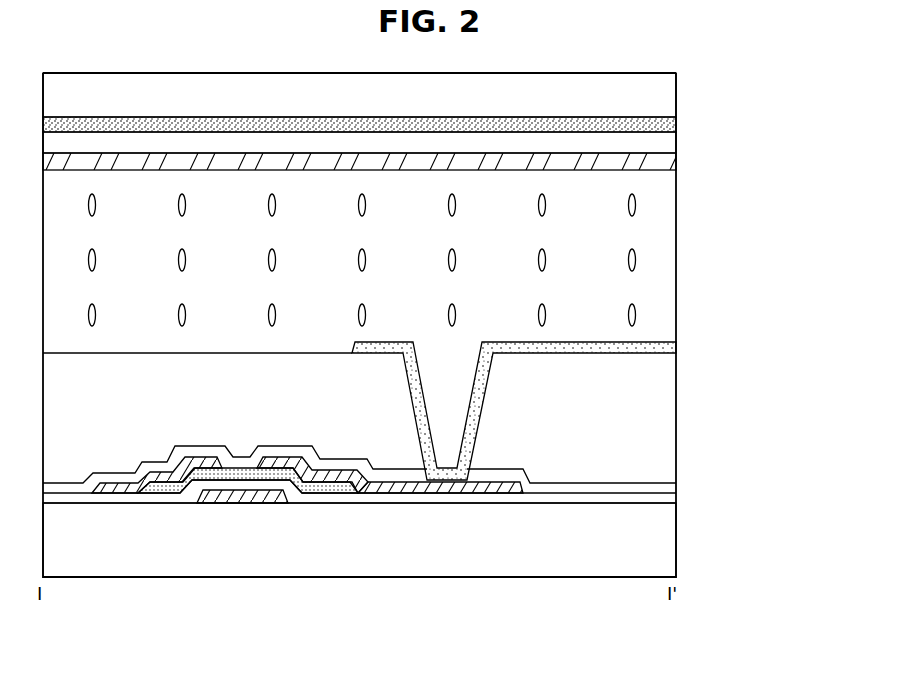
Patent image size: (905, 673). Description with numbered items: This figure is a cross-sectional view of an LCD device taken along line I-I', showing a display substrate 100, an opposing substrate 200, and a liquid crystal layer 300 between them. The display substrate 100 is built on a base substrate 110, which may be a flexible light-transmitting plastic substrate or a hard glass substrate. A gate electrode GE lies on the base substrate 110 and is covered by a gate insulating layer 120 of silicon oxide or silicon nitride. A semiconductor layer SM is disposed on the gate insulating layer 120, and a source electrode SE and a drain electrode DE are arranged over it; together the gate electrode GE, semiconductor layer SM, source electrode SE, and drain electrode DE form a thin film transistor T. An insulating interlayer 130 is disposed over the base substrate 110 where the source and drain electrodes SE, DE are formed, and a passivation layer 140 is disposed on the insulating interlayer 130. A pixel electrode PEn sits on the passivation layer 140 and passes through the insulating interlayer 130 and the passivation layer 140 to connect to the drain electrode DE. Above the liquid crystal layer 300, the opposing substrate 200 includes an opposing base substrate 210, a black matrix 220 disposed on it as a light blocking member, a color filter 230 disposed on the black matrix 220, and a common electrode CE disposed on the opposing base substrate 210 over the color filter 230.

The opposing substrate 200 is at (425, 121).
The opposing base substrate 210 is at (668, 90).
The black matrix 220 is at (672, 121).
The color filter 230 is at (668, 140).
The common electrode CE is at (396, 157).
The liquid crystal layer 300 is at (668, 250).
The pixel electrode PEn is at (665, 348).
The display substrate 100 is at (425, 459).
The base substrate 110 is at (396, 540).
The gate insulating layer 120 is at (668, 497).
The insulating interlayer 130 is at (668, 484).
The passivation layer 140 is at (668, 416).
The thin film transistor T is at (245, 559).
The gate electrode GE is at (242, 503).
The semiconductor layer SM is at (172, 493).
The source electrode SE is at (118, 493).
The drain electrode DE is at (327, 539).